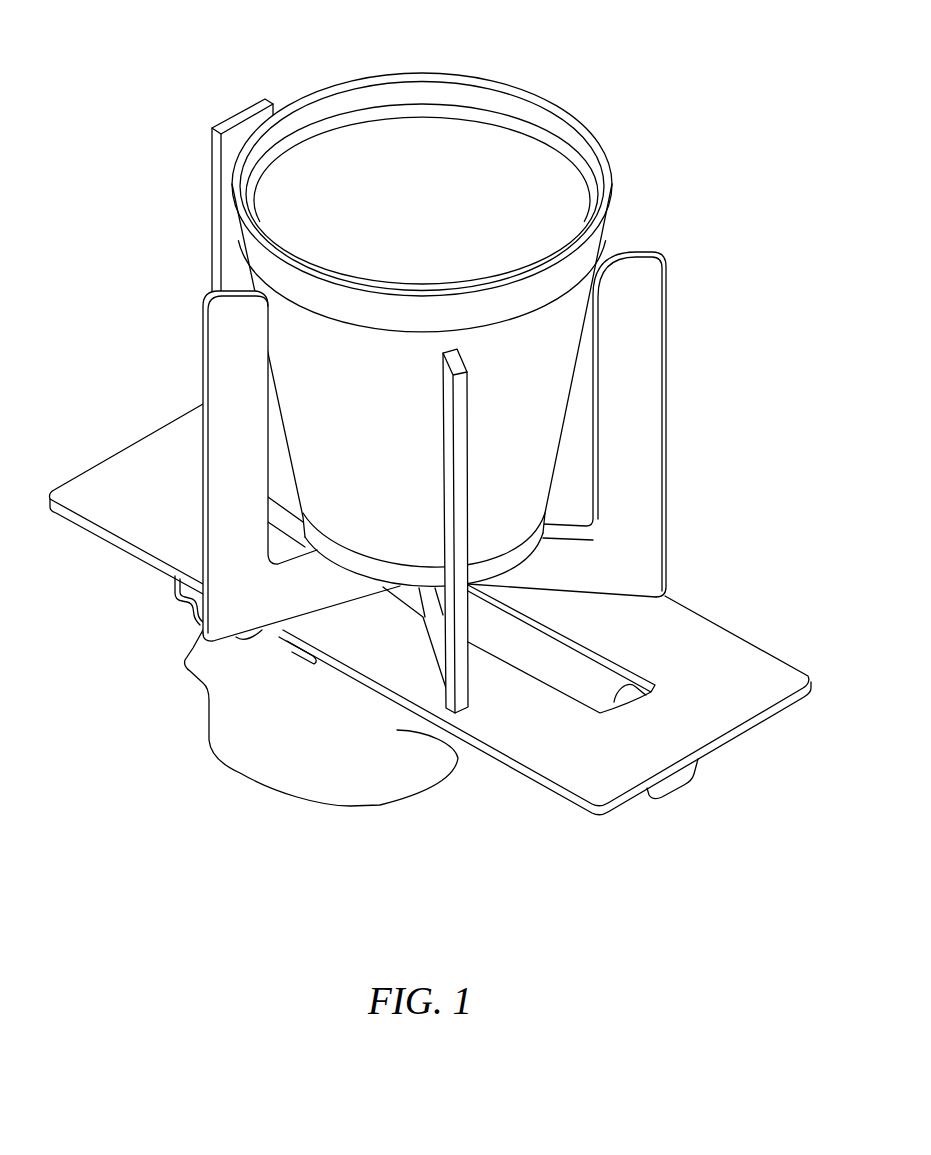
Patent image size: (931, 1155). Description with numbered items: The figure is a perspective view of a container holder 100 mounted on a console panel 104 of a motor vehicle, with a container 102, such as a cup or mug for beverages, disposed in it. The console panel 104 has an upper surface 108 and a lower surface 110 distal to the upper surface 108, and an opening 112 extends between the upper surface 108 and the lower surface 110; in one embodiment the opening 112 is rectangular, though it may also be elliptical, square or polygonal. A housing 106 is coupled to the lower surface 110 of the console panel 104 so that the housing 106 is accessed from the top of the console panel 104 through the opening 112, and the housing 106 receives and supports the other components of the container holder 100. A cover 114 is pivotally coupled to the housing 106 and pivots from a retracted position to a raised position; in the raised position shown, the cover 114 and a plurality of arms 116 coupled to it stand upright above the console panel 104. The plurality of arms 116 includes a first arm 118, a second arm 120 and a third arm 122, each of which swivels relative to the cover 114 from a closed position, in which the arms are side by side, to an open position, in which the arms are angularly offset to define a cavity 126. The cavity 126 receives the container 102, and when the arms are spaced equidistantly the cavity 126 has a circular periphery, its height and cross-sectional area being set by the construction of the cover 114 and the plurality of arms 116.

The container holder 100 is at (718, 232).
The container 102 is at (421, 72).
The console panel 104 is at (735, 628).
The housing 106 is at (373, 810).
The upper surface 108 is at (765, 668).
The lower surface 110 is at (628, 808).
The opening 112 is at (650, 690).
The cover 114 is at (238, 112).
The plurality of arms 116 is at (190, 293).
The first arm 118 is at (200, 355).
The second arm 120 is at (468, 690).
The third arm 122 is at (668, 516).
The cavity 126 is at (628, 224).